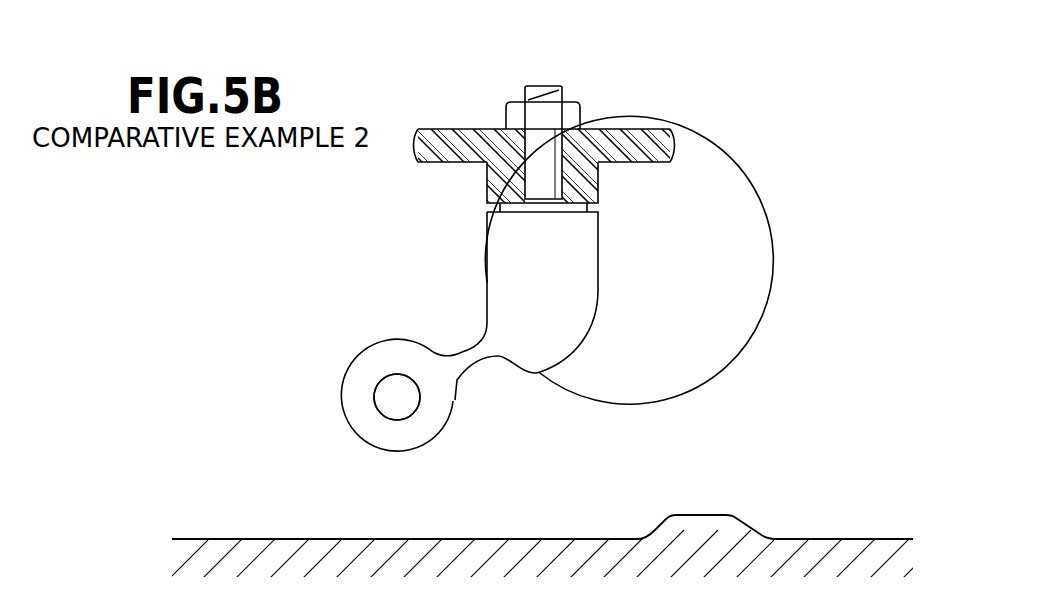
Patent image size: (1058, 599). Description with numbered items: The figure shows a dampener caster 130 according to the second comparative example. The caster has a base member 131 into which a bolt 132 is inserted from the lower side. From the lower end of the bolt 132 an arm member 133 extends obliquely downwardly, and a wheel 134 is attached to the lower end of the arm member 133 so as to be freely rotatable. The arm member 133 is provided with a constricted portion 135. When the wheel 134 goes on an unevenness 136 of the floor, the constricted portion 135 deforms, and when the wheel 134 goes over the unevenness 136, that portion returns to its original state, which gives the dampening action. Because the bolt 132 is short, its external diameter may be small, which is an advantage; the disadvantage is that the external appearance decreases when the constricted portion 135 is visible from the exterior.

The dampener caster 130 is at (500, 231).
The base member 131 is at (668, 146).
The bolt 132 is at (542, 84).
The arm member 133 is at (560, 340).
The wheel 134 is at (277, 320).
The constricted portion 135 is at (470, 357).
The unevenness 136 is at (708, 515).